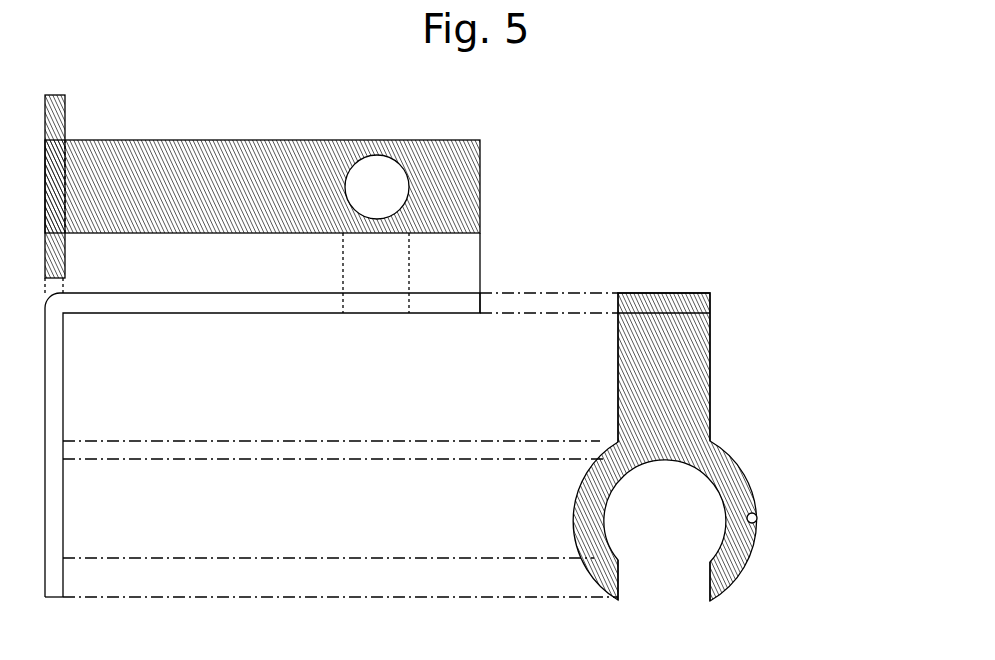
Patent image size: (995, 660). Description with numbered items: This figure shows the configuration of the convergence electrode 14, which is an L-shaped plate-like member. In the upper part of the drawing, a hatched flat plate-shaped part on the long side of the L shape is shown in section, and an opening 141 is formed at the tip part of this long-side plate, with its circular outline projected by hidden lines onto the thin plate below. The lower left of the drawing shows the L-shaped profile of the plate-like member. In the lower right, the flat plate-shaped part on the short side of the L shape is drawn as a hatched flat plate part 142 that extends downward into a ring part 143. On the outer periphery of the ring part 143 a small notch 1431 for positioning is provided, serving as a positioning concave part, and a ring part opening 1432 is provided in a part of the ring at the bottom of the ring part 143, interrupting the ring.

The convergence electrode 14 is at (453, 374).
The opening 141 is at (378, 186).
The flat plate part 142 is at (712, 360).
The ring part 143 is at (738, 465).
The notch 1431 is at (760, 516).
The ring part opening 1432 is at (663, 563).